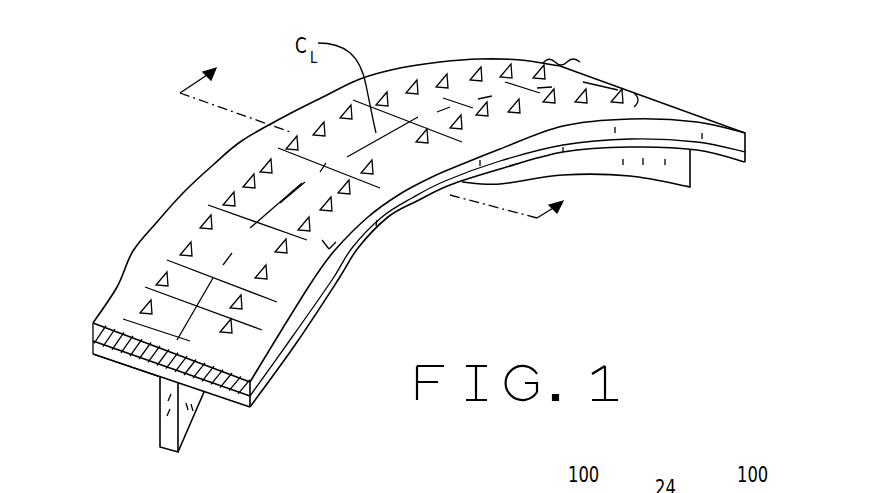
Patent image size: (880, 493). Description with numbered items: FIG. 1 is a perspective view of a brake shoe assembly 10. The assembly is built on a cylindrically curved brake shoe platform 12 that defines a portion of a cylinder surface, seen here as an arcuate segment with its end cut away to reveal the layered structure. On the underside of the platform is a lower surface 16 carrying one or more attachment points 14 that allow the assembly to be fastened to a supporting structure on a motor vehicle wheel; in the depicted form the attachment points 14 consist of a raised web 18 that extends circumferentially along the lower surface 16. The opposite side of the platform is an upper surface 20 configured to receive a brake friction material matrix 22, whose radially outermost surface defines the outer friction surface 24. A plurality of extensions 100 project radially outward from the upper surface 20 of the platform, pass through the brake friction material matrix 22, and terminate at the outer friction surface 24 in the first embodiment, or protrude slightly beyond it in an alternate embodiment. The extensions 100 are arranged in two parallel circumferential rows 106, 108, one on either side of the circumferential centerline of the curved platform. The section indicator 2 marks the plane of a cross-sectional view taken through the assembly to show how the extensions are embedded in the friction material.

The section line 2- 2 is at (381, 133).
The brake shoe assembly 10 is at (594, 232).
The brake shoe platform 12 is at (268, 388).
The attachment points 14 is at (199, 425).
The lower surface 16 is at (127, 368).
The raised web 18 is at (167, 440).
The upper surface 20 is at (222, 372).
The brake friction material matrix 22 is at (132, 346).
The outer friction surface 24 is at (330, 246).
The extensions 100 is at (414, 85).
The first circumferential row 106 is at (578, 62).
The second circumferential row 108 is at (642, 90).